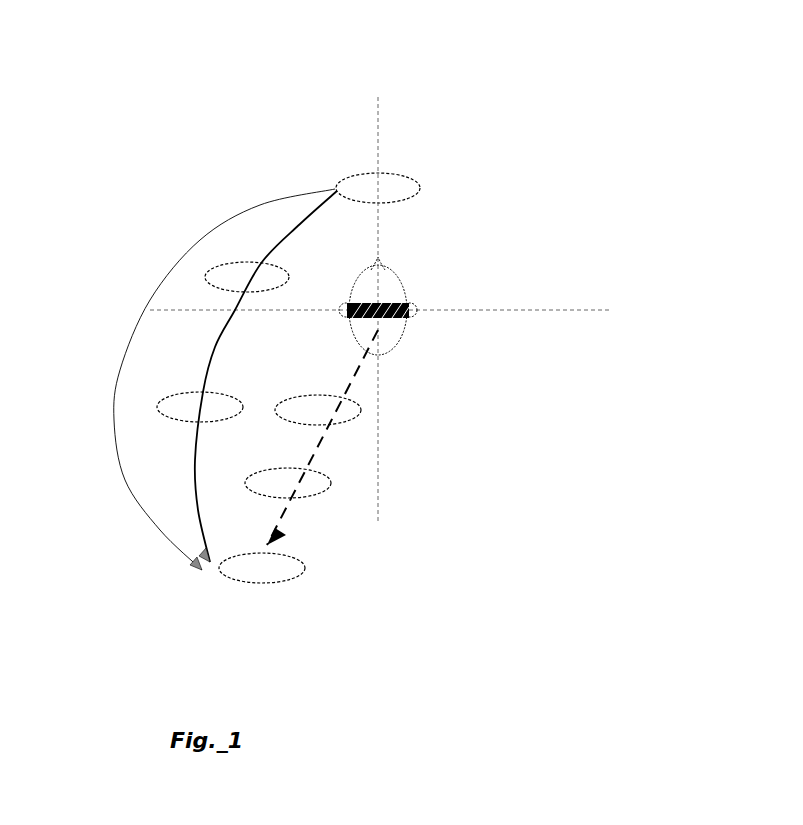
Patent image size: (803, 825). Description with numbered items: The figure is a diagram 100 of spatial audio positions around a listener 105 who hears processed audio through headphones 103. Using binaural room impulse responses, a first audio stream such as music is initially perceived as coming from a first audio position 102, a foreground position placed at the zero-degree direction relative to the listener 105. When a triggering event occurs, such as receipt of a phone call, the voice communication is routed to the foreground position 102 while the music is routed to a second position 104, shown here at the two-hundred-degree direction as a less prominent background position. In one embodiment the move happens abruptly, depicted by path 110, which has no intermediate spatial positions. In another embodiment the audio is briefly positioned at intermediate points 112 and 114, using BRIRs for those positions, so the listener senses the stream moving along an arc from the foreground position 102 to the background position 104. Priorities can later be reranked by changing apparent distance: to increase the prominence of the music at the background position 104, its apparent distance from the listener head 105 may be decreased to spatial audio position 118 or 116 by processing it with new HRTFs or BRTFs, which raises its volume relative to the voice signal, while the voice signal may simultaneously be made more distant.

The audio scene / sound field layout 100 is at (415, 316).
The first audio position 102 is at (420, 186).
The headphones 103 is at (407, 302).
The second position 104 is at (263, 585).
The listener 105 is at (415, 340).
The path 110 is at (150, 524).
The intermediate point 112 is at (282, 258).
The intermediate point 114 is at (225, 385).
The spatial audio position 116 is at (368, 422).
The spatial audio position 118 is at (343, 487).